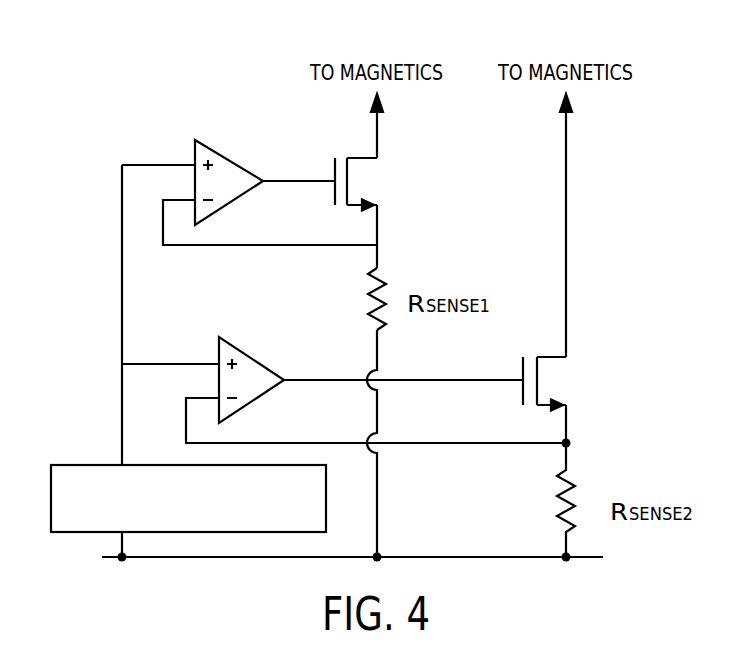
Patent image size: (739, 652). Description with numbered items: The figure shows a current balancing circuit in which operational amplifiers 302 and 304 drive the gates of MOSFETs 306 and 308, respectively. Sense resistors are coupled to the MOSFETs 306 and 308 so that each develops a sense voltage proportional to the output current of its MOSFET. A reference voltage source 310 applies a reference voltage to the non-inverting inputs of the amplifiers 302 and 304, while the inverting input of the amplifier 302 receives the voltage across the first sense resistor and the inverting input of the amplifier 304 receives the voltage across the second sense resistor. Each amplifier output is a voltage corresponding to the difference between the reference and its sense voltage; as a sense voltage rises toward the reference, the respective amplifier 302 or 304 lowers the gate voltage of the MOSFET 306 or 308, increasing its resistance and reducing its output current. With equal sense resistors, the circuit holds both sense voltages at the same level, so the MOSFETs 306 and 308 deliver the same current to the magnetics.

The operational amplifier 302 is at (232, 157).
The operational amplifier 304 is at (257, 356).
The MOSFET 306 is at (381, 182).
The MOSFET 308 is at (572, 381).
The reference voltage source 310 is at (77, 464).